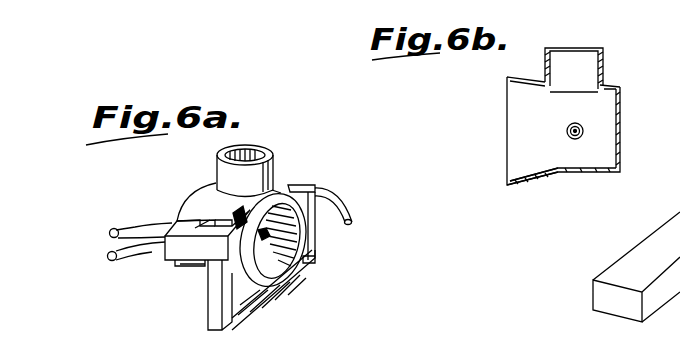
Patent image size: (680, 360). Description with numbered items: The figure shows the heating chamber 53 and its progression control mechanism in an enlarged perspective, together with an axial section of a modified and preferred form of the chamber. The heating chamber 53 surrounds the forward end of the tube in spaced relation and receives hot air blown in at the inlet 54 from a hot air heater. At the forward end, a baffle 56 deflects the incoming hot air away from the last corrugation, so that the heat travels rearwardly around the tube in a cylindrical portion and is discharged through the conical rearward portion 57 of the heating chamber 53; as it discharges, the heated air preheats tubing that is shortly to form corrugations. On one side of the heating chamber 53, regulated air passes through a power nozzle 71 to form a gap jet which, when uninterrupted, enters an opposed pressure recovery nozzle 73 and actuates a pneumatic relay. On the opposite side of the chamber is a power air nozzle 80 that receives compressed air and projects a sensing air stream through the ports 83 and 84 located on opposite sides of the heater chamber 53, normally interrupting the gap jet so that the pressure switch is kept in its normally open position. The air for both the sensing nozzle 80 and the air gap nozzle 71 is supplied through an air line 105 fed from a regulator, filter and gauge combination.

In FIG. 6a, the heating chamber 53 is at (207, 195).
In FIG. 6b, the heating chamber 53 is at (580, 177).
In FIG. 6a, the hot air inlet 54 is at (260, 148).
In FIG. 6b, the hot air inlet 54 is at (603, 58).
In FIG. 6b, the baffle 56 is at (621, 98).
In FIG. 6b, the conical rearward portion 57 is at (511, 185).
In FIG. 6a, the power nozzle 71 is at (144, 257).
In FIG. 6a, the pressure recovery nozzle 73 is at (150, 223).
In FIG. 6a, the power air nozzle 80 is at (298, 234).
In FIG. 6a, the port 83 is at (267, 238).
In FIG. 6a, the port 84 is at (228, 212).
In FIG. 6a, the air line 105 is at (343, 197).